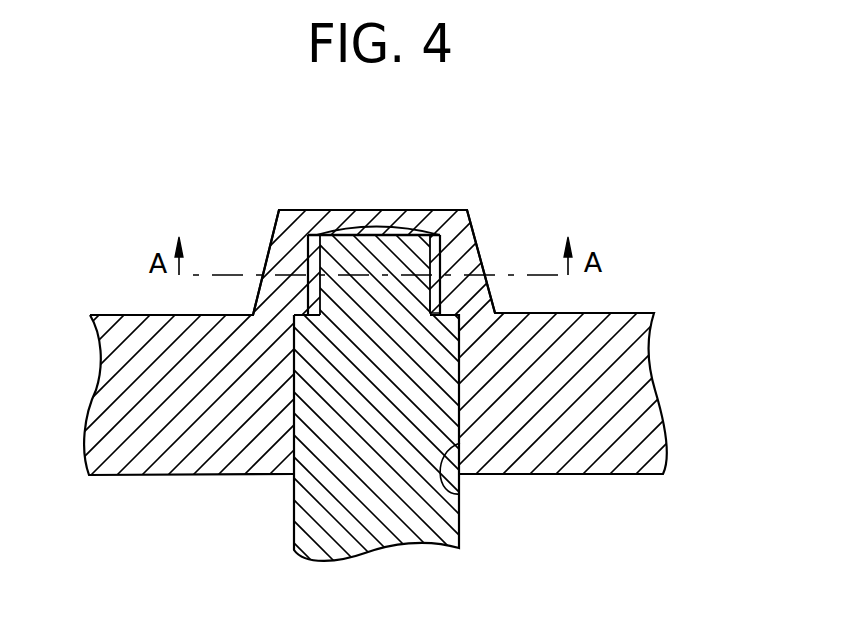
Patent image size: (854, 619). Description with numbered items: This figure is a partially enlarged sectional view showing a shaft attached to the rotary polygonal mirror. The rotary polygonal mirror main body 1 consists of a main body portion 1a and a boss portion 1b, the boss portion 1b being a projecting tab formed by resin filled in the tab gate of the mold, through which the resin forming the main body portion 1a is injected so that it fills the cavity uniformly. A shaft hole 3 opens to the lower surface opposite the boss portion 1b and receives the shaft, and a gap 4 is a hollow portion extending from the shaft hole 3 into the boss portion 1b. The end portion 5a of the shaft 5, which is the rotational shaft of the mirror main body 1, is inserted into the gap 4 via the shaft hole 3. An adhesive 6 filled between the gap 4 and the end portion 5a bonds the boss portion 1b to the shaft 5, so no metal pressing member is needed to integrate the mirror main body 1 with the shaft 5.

The rotary polygonal mirror main body 1 is at (145, 477).
The main body portion 1a is at (636, 352).
The boss portion 1b is at (450, 230).
The shaft hole 3 is at (458, 500).
The gap 4 is at (423, 296).
The shaft 5 is at (448, 530).
The end portion of the shaft 5a is at (373, 247).
The adhesive 6 is at (432, 252).